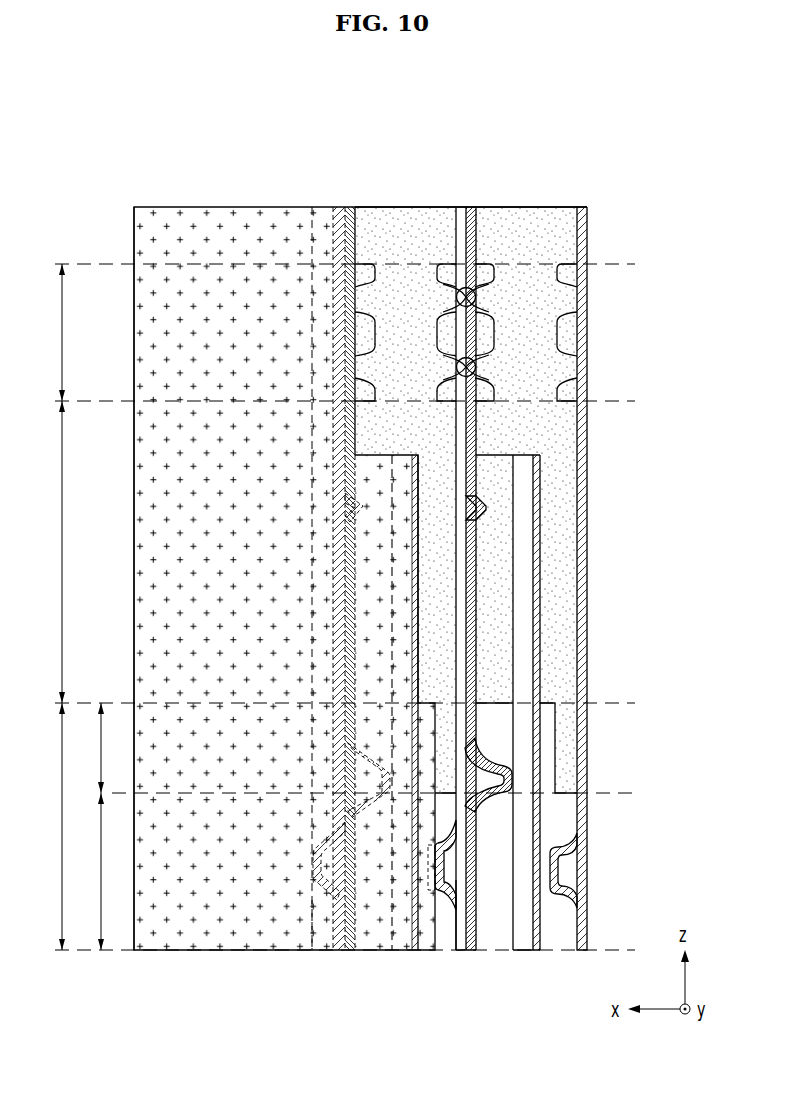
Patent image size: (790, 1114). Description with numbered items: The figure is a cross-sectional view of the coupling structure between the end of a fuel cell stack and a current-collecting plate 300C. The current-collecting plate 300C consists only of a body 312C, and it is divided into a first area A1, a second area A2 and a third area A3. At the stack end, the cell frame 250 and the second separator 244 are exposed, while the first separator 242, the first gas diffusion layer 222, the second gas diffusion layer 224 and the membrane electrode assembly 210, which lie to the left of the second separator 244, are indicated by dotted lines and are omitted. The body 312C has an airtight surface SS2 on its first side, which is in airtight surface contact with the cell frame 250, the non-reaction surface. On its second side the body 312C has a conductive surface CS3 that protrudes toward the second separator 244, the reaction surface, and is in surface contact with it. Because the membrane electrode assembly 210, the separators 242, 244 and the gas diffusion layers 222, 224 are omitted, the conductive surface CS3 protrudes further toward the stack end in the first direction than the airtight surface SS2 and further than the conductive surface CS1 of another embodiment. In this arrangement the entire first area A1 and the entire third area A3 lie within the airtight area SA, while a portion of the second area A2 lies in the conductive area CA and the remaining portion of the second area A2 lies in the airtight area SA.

The current-collecting plate 300C is at (150, 187).
The body 312C is at (249, 214).
The airtight surface SS2 is at (355, 284).
The cell frame 250 is at (406, 214).
The conductive surface CS1 is at (310, 920).
The second separator 244 is at (326, 895).
The first separator 242 is at (352, 926).
The first gas diffusion layer 222 is at (404, 936).
The membrane electrode assembly 210 is at (415, 944).
The second gas diffusion layer 224 is at (432, 947).
The conductive surface CS3 is at (454, 914).
The first area A1 is at (51, 332).
The second area A2 is at (51, 826).
The third area A3 is at (51, 552).
The airtight area SA is at (89, 748).
The conductive area CA is at (89, 871).